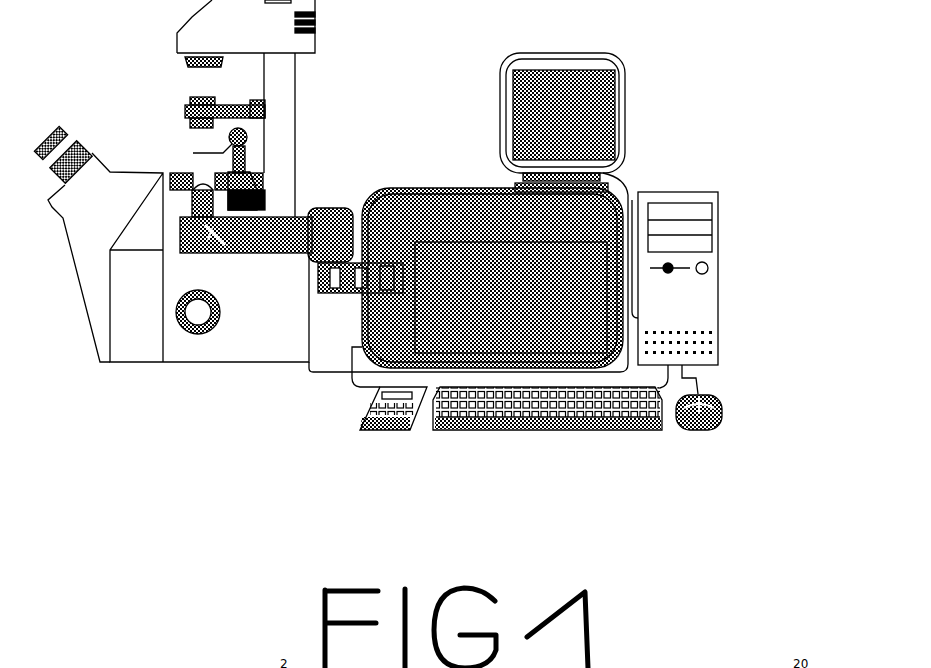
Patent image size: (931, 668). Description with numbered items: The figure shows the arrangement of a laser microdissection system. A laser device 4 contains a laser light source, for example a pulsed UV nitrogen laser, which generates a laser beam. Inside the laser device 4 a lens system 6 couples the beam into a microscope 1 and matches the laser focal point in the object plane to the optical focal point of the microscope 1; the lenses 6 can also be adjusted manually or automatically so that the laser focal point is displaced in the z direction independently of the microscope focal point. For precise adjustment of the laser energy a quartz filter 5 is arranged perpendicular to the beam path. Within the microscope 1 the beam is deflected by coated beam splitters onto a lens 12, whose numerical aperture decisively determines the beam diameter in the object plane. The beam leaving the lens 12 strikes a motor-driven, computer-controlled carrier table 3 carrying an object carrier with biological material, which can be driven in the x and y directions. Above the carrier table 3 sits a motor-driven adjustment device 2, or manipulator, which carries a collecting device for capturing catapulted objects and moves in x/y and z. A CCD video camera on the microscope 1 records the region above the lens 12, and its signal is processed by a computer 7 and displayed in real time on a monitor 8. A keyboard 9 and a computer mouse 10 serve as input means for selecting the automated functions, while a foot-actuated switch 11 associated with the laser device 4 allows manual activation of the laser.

The microscope 1 is at (75, 282).
The adjustment device 2 is at (258, 152).
The carrier table 3 is at (187, 173).
The laser device 4 is at (445, 187).
The quartz filter 5 is at (388, 294).
The lens system 6 is at (353, 300).
The computer 7 is at (722, 220).
The monitor 8 is at (627, 70).
The keyboard 9 is at (528, 437).
The computer mouse 10 is at (725, 404).
The foot-actuated switch 11 is at (388, 437).
The lens 12 is at (187, 197).